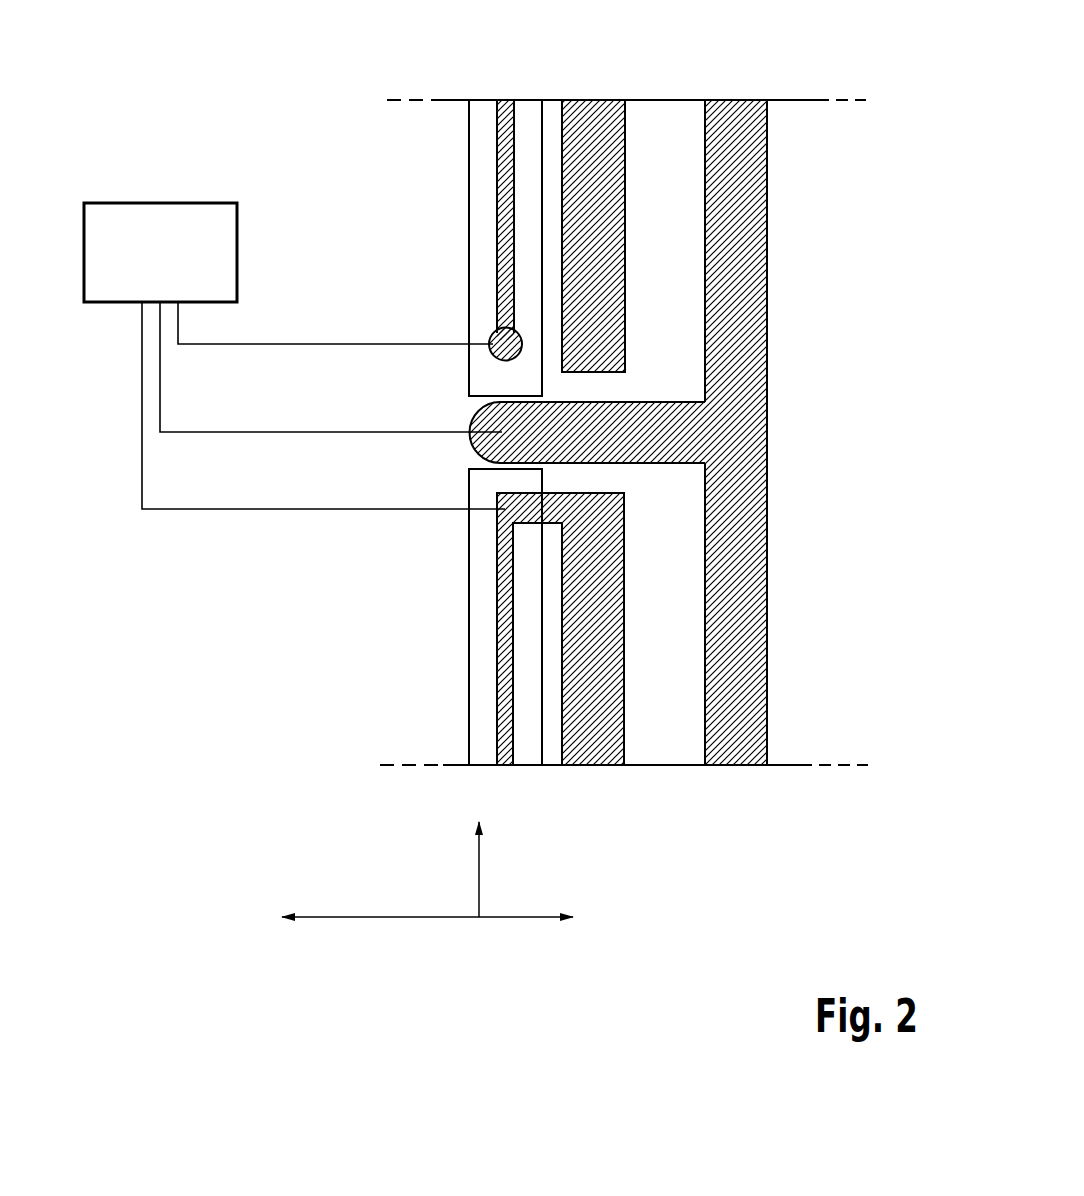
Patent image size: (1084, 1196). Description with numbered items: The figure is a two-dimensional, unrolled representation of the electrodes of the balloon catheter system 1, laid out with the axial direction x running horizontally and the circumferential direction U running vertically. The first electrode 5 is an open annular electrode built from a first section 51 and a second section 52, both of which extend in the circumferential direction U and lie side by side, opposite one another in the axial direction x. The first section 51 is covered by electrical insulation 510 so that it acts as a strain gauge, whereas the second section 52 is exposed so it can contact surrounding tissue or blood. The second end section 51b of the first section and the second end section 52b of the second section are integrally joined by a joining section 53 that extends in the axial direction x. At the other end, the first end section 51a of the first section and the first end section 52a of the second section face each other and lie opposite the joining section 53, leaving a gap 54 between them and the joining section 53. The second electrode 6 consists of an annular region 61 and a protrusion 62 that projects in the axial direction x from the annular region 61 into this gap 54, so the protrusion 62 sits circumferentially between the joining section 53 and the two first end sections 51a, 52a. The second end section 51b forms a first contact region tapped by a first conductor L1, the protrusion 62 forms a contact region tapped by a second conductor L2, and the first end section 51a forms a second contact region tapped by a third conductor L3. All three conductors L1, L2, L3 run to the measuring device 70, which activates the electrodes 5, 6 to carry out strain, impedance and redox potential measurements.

The balloon catheter system 1 is at (330, 155).
The first electrode 5 is at (598, 100).
The second electrode 6 is at (740, 100).
The first section 51 is at (606, 432).
The first end section 51a is at (495, 334).
The second end section 51b is at (507, 502).
The second section 52 is at (705, 236).
The first end section 52a is at (610, 360).
The second end section 52b is at (610, 513).
The joining section 53 is at (512, 538).
The gap 54 is at (567, 482).
The annular region 61 is at (752, 552).
The protrusion 62 is at (493, 417).
The measuring device 70 is at (130, 203).
The electrical insulation 510 is at (482, 144).
The first conductor L1 is at (268, 512).
The second conductor L2 is at (286, 432).
The third conductor L3 is at (287, 344).
The axial direction x is at (365, 917).
The circumferential direction U is at (480, 876).